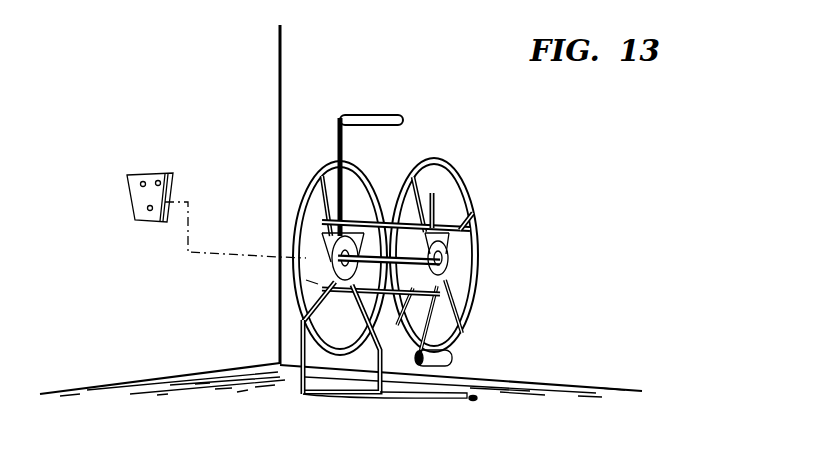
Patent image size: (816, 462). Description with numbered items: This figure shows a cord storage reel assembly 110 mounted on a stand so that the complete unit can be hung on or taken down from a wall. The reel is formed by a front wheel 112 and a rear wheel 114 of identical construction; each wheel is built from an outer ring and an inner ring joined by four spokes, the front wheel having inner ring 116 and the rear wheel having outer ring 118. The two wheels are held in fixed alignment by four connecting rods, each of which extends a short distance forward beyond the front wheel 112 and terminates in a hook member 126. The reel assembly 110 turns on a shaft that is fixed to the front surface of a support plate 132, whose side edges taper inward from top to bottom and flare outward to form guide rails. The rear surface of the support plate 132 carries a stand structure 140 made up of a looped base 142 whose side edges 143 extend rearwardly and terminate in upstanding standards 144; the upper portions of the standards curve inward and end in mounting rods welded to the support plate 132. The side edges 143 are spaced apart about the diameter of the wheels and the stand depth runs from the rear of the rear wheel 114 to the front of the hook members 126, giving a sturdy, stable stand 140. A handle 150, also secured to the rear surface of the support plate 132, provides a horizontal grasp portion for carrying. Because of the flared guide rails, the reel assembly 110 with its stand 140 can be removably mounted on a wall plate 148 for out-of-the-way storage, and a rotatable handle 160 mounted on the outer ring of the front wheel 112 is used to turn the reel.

The cord storage reel assembly 110 is at (404, 146).
The front wheel 112 is at (435, 162).
The rear wheel 114 is at (328, 163).
The inner ring 116 is at (452, 280).
The outer ring 118 is at (358, 160).
The hook member 126 is at (478, 219).
The support plate 132 is at (306, 282).
The stand structure 140 is at (482, 397).
The looped base 142 is at (437, 398).
The side edges 143 is at (343, 396).
The upstanding standards 144 is at (293, 384).
The wall plate 148 is at (128, 208).
The handle 150 is at (341, 117).
The rotatable handle 160 is at (455, 359).